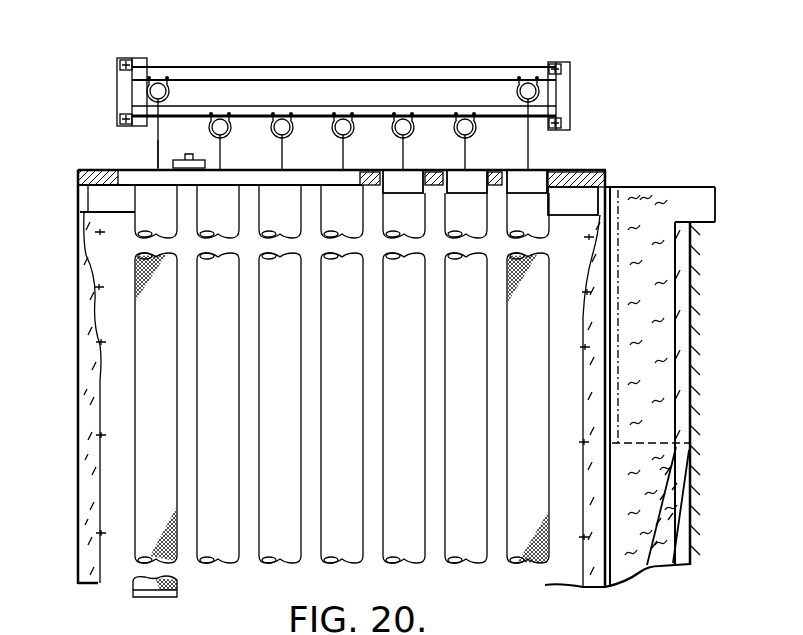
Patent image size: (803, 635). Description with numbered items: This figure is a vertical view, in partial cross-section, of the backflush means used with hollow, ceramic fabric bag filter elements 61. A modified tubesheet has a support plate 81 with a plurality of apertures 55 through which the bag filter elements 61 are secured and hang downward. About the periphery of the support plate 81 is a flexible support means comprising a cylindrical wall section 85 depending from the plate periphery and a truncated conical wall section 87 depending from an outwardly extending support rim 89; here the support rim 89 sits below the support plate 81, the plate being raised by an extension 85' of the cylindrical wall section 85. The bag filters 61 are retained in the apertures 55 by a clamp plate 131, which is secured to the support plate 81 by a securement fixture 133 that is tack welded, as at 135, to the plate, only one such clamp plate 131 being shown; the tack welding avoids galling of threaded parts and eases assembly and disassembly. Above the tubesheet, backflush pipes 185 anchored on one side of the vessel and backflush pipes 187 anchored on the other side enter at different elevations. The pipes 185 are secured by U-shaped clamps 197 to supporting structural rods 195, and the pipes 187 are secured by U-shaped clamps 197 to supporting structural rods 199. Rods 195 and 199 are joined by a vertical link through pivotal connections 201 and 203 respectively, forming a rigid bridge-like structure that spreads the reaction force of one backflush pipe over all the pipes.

The apertures 55 is at (426, 171).
The tubular fabric bag filter elements 61 is at (487, 561).
The support plate 81 is at (100, 167).
The cylindrical wall section 85 is at (376, 400).
The extension of the cylindrical wall section 85' is at (585, 316).
The truncated conical wall section 87 is at (660, 516).
The support rim 89 is at (690, 438).
The clamp plate 131 is at (188, 158).
The securement fixture 133 is at (185, 150).
The tack weld 135 is at (203, 163).
The backflush pipes 185 is at (474, 142).
The backflush pipes 187 is at (158, 76).
The supporting structural rods 195 is at (426, 114).
The U-shaped clamps 197 is at (237, 115).
The supporting structural rods 199 is at (360, 74).
The pivotal connection 201 is at (122, 63).
The pivotal connection 203 is at (121, 126).